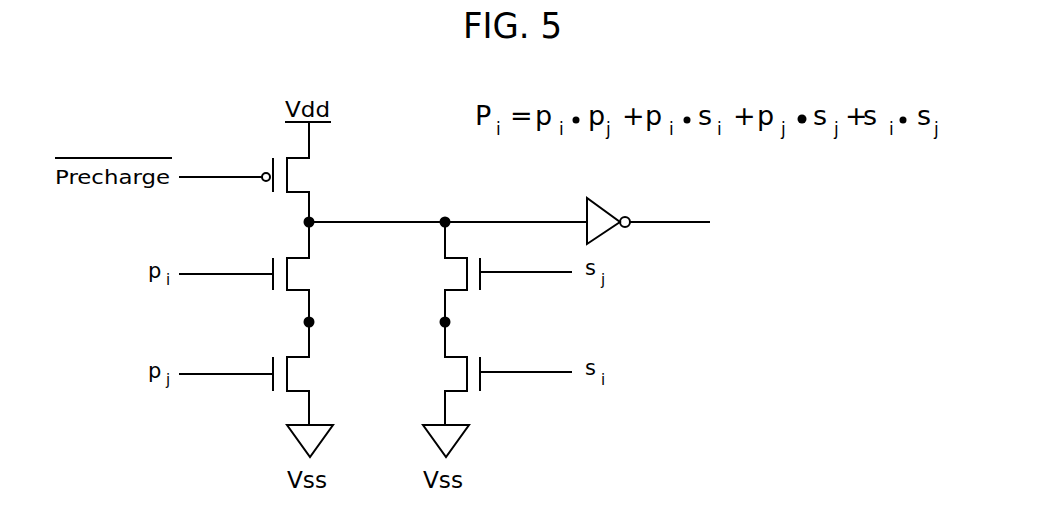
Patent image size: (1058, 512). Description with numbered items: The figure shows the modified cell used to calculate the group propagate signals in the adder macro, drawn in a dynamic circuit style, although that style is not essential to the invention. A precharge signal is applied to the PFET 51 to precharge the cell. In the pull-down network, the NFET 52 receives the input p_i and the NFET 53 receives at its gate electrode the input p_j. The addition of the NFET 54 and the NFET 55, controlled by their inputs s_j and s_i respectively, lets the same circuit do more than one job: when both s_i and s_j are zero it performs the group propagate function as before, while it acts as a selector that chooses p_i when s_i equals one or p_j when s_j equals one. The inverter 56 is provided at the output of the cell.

The PFET 51 is at (313, 172).
The NFET 52 is at (312, 275).
The NFET 53 is at (312, 374).
The NFET 54 is at (452, 275).
The NFET 55 is at (452, 374).
The inverter 56 is at (603, 203).